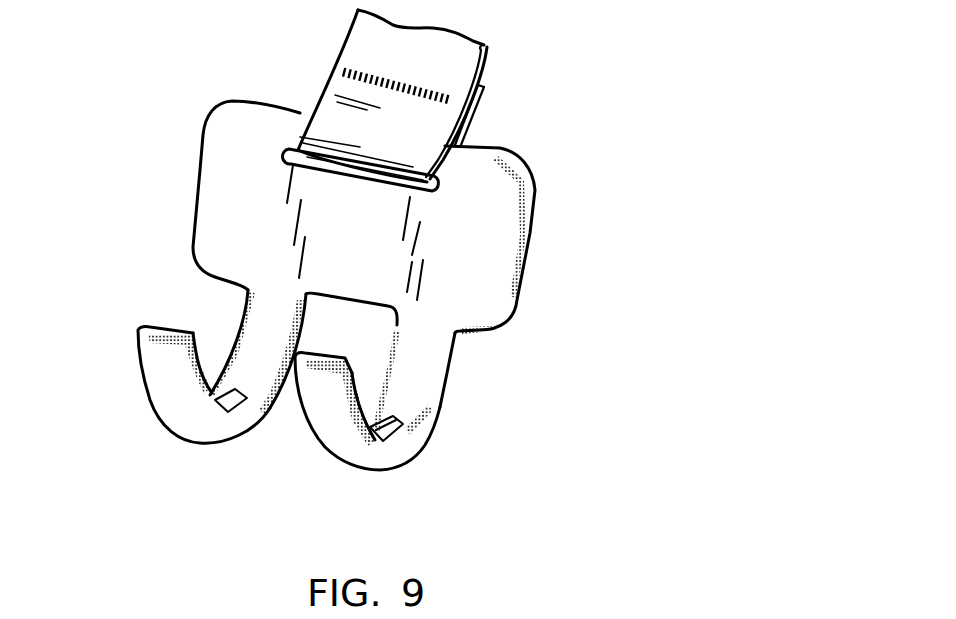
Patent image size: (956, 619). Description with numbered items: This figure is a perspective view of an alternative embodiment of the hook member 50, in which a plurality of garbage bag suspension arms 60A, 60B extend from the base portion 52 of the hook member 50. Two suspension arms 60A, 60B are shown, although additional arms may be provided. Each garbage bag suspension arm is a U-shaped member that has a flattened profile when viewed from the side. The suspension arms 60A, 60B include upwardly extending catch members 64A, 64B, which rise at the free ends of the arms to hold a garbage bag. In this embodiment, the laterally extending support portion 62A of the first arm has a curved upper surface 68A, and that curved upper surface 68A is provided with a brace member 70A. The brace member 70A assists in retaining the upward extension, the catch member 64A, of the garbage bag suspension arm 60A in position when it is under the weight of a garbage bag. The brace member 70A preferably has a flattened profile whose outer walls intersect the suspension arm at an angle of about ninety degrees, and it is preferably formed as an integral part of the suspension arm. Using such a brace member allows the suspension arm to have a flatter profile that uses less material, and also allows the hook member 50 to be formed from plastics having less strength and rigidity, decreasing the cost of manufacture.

The hook member 50 is at (557, 170).
The base portion 52 is at (487, 273).
The garbage bag suspension arm 60A is at (450, 365).
The garbage bag suspension arm 60B is at (267, 309).
The laterally extending support portion 62A is at (378, 468).
The catch member 64A is at (323, 408).
The catch member 64B is at (163, 366).
The curved upper surface 68A is at (410, 408).
The brace member 70A is at (380, 440).